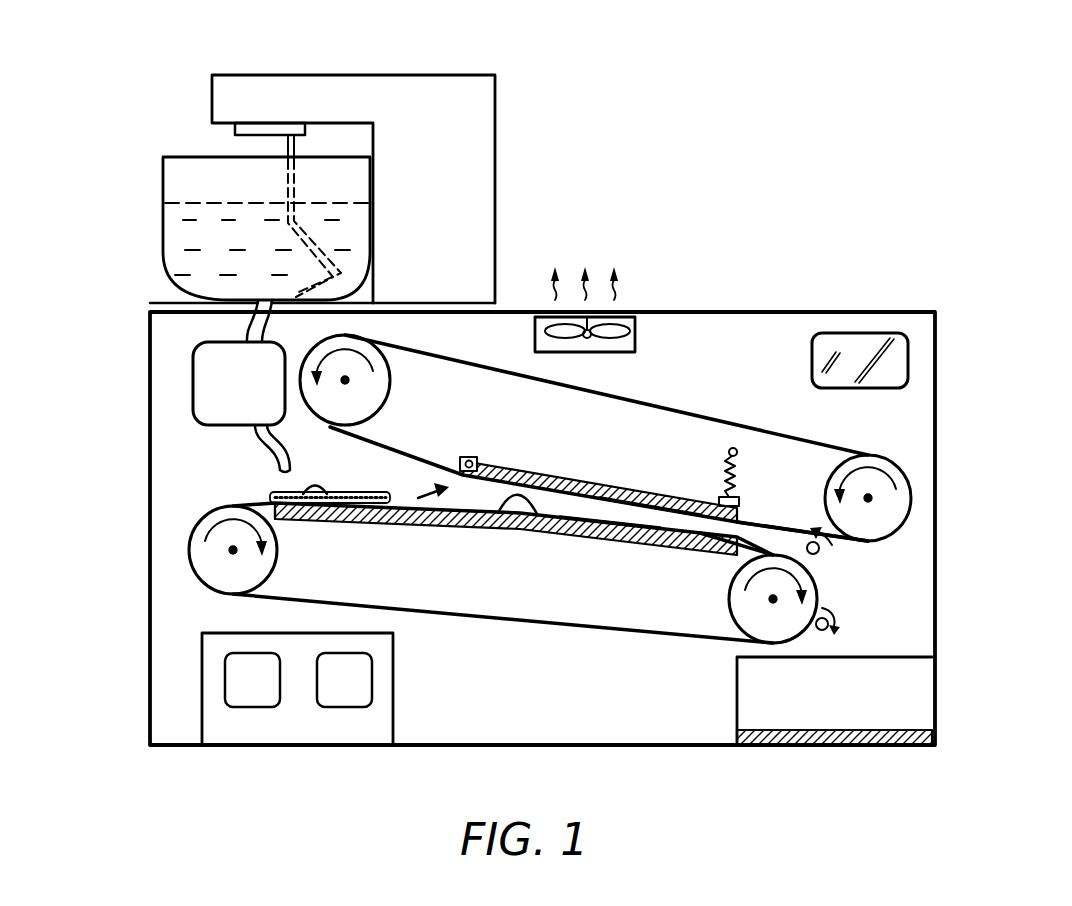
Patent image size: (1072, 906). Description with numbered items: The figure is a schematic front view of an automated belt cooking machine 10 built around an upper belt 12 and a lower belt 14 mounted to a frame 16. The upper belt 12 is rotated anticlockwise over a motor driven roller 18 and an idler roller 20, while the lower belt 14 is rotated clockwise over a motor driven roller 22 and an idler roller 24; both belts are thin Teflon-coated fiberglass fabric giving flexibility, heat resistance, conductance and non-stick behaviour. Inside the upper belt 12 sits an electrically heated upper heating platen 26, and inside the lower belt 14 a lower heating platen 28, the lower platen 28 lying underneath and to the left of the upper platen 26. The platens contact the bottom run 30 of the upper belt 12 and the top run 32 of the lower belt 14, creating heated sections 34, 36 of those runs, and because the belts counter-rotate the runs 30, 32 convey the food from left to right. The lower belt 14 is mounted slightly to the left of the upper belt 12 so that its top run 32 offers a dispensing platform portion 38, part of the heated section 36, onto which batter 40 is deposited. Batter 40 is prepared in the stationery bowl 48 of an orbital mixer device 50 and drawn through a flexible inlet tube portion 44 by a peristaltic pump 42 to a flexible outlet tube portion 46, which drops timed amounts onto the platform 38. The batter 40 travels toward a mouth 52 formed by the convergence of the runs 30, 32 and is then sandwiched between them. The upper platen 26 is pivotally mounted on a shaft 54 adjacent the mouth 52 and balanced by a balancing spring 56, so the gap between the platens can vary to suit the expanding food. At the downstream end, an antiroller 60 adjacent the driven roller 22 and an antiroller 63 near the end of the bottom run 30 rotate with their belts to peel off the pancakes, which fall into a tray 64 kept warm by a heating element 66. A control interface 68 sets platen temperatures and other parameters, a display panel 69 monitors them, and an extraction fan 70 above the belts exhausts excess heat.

The automated belt cooking machine 10 is at (866, 182).
The upper belt 12 is at (650, 405).
The lower belt 14 is at (620, 632).
The frame 16 is at (936, 393).
The motor driven roller 18 is at (905, 493).
The idler roller 20 is at (390, 370).
The motor driven roller 22 is at (818, 588).
The idler roller 24 is at (208, 548).
The upper heating platen 26 is at (647, 493).
The lower heating platen 28 is at (647, 540).
The bottom run 30 is at (770, 540).
The top run 32 is at (735, 535).
The heated section 34 is at (470, 485).
The heated section 36 is at (505, 514).
The dispensing platform portion 38 is at (282, 514).
The batter 40 is at (350, 494).
The peristaltic pump 42 is at (193, 375).
The flexible inlet tube portion 44 is at (250, 325).
The flexible outlet tube portion 46 is at (265, 462).
The stationery bowl 48 is at (163, 205).
The orbital mixer device 50 is at (212, 90).
The mouth 52 is at (400, 512).
The shaft 54 is at (471, 460).
The balancing spring 56 is at (722, 492).
The antiroller 60 is at (818, 631).
The antiroller 63 is at (819, 556).
The tray 64 is at (908, 657).
The heating element 66 is at (908, 728).
The control interface 68 is at (202, 682).
The display panel 69 is at (925, 333).
The extraction fan 70 is at (622, 335).